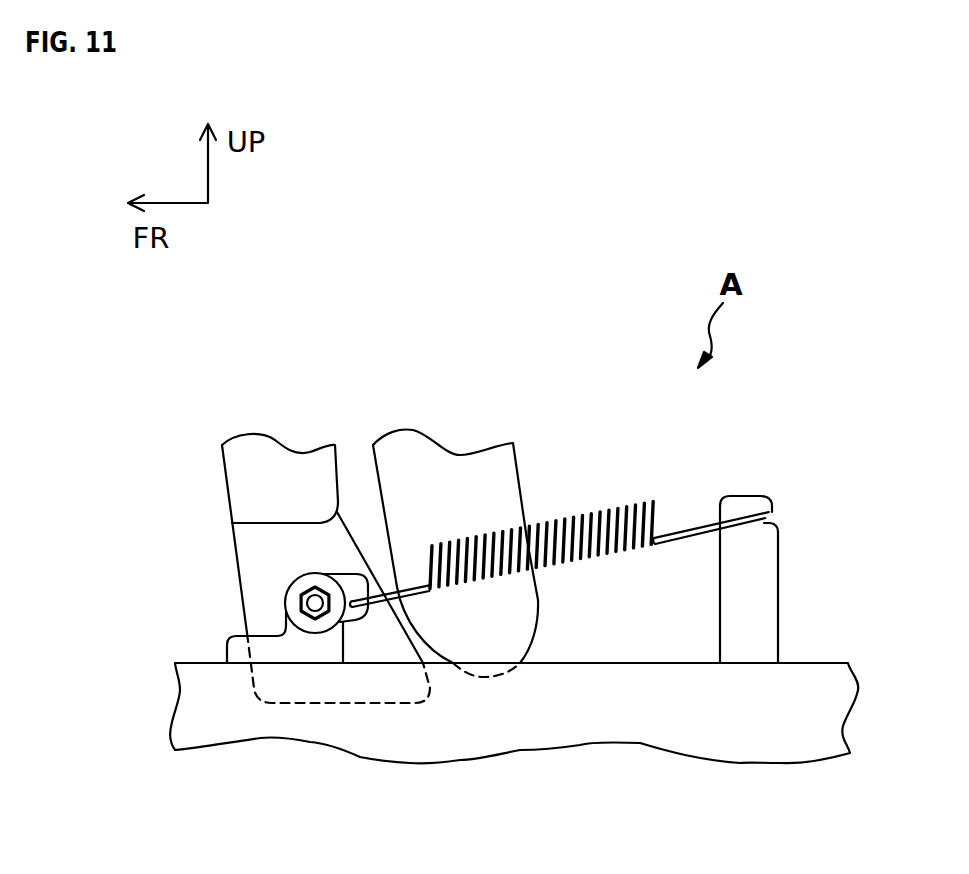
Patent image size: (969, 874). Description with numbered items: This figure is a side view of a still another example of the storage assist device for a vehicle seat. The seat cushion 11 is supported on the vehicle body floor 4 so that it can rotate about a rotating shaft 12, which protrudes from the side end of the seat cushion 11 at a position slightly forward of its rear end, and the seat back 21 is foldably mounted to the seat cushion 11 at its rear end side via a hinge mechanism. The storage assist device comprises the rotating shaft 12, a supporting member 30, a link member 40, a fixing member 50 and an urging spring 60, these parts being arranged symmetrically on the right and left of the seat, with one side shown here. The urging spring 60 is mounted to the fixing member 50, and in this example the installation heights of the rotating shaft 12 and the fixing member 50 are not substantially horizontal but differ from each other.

The vehicle body floor 4 is at (195, 663).
The seat cushion 11 is at (294, 464).
The rotating shaft 12 is at (312, 608).
The seat back 21 is at (470, 468).
The supporting member 30 is at (231, 637).
The link member 40 is at (350, 622).
The fixing member 50 is at (770, 593).
The urging spring 60 is at (596, 507).